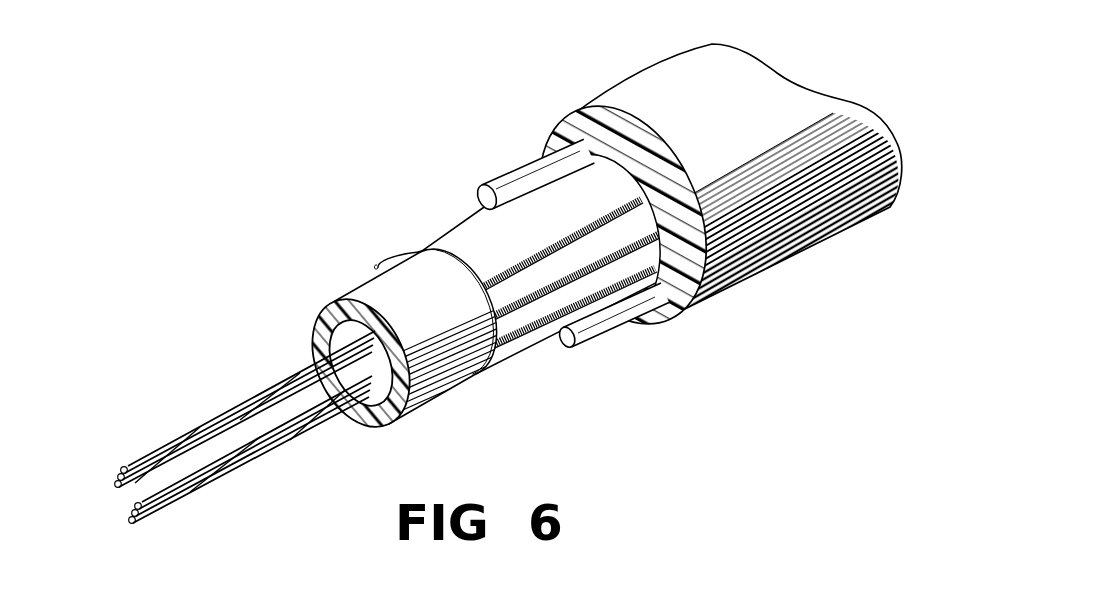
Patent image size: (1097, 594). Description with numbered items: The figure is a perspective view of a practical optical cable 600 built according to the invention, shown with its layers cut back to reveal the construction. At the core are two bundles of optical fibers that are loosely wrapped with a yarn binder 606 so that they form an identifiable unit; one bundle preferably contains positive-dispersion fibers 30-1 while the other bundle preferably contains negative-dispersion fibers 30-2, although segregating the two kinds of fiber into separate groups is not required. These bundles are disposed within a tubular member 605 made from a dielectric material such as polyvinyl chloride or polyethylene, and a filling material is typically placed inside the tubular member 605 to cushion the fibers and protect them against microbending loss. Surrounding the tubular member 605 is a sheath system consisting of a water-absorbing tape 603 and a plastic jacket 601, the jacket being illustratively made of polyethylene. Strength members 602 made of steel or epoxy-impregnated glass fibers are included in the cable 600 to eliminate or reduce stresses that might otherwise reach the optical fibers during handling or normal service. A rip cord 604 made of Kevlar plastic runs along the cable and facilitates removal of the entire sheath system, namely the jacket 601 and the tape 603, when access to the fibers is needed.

The optical cable 600 is at (734, 264).
The plastic jacket 601 is at (553, 123).
The strength members 602 is at (496, 181).
The water-absorbing tape 603 is at (461, 237).
The rip cord 604 is at (380, 266).
The tubular member 605 is at (320, 325).
The yarn binder 606 is at (216, 451).
The positive-dispersion fibers 30-1 is at (130, 463).
The negative-dispersion fibers 30-2 is at (157, 515).